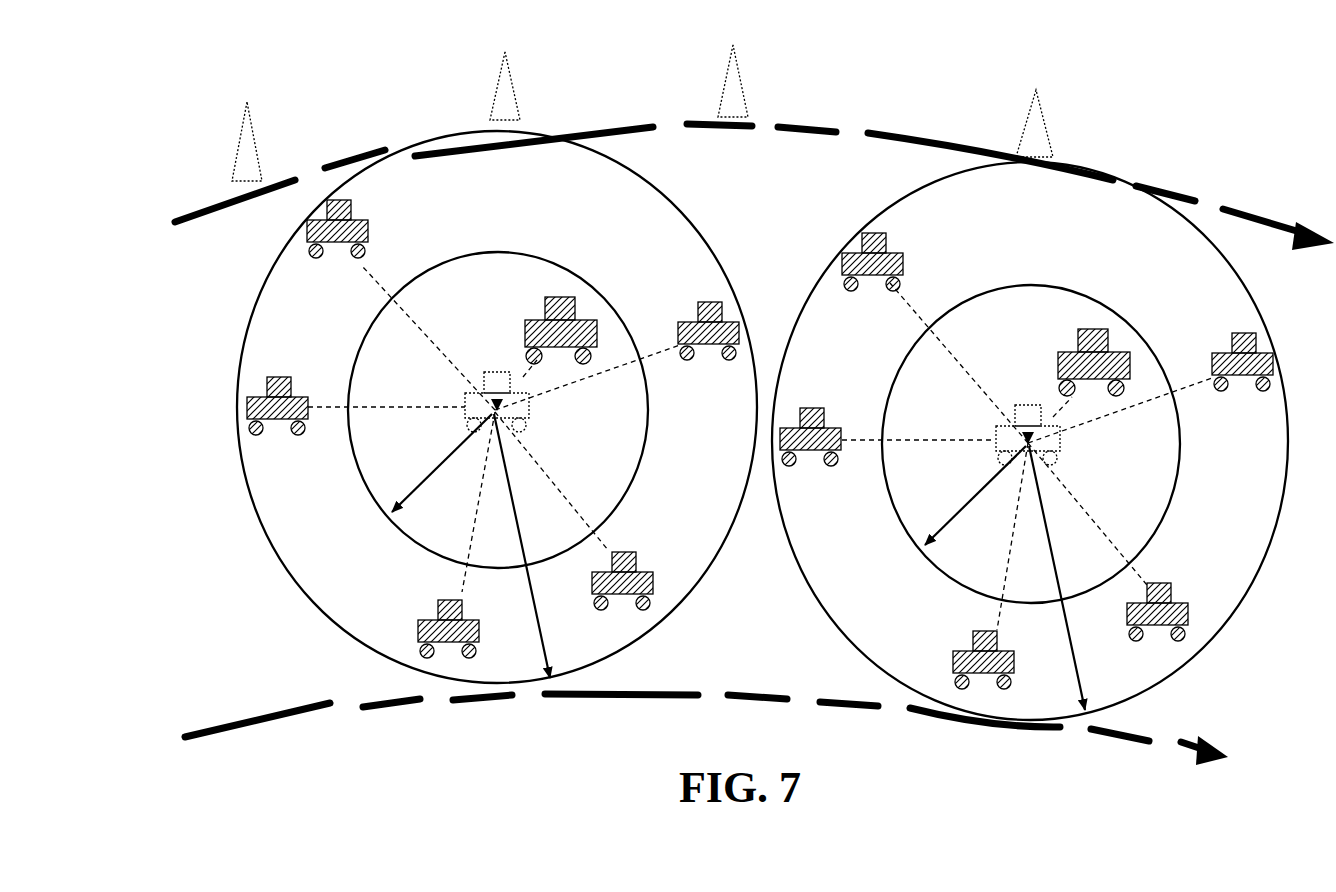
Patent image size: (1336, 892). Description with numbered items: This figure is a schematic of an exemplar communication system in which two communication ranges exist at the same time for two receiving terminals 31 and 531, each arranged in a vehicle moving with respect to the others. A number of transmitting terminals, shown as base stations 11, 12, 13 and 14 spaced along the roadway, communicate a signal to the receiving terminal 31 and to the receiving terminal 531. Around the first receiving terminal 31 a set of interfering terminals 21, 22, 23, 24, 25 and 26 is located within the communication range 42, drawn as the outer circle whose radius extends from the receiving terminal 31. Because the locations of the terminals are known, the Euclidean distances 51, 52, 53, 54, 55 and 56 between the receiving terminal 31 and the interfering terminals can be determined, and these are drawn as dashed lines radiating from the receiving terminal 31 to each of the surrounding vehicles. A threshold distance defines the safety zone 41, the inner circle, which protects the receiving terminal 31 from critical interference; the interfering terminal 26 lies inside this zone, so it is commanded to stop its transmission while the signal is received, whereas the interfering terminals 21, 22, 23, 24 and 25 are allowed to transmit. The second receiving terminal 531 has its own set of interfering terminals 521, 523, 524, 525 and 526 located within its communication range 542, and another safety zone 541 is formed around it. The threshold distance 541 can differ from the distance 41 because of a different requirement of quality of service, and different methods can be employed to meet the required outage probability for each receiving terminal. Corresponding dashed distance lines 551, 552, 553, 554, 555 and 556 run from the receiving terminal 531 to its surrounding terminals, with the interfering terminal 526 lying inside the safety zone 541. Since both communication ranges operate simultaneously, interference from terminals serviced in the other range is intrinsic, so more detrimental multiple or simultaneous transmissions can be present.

The base station 11 is at (247, 124).
The base station 12 is at (505, 71).
The base station 13 is at (733, 69).
The base station 14 is at (1034, 110).
The interfering terminal 21 is at (352, 229).
The interfering terminal 22 is at (277, 392).
The interfering terminal 23 is at (425, 629).
The interfering terminal 24 is at (622, 573).
The interfering terminal 25 is at (708, 317).
The interfering terminal 26 is at (552, 319).
The receiving terminal 31 is at (511, 402).
The safety zone 41 is at (442, 463).
The communication range 42 is at (537, 546).
The Euclidean distance 51 is at (429, 338).
The Euclidean distance 52 is at (386, 406).
The Euclidean distance 53 is at (468, 502).
The Euclidean distance 54 is at (551, 481).
The Euclidean distance 55 is at (587, 377).
The Euclidean distance 56 is at (517, 359).
The interfering terminal 521 is at (890, 262).
The interfering terminal 523 is at (958, 660).
The interfering terminal 524 is at (1162, 602).
The interfering terminal 525 is at (1234, 348).
The interfering terminal 526 is at (1082, 351).
The receiving terminal 531 is at (1047, 435).
The safety zone 541 is at (975, 495).
The communication range 542 is at (1074, 578).
The inter-vehicle distance 551 is at (959, 363).
The inter-vehicle distance 552 is at (918, 435).
The inter-vehicle distance 553 is at (1000, 536).
The inter-vehicle distance 554 is at (1087, 514).
The inter-vehicle distance 555 is at (1120, 410).
The inter-vehicle distance 556 is at (1050, 394).